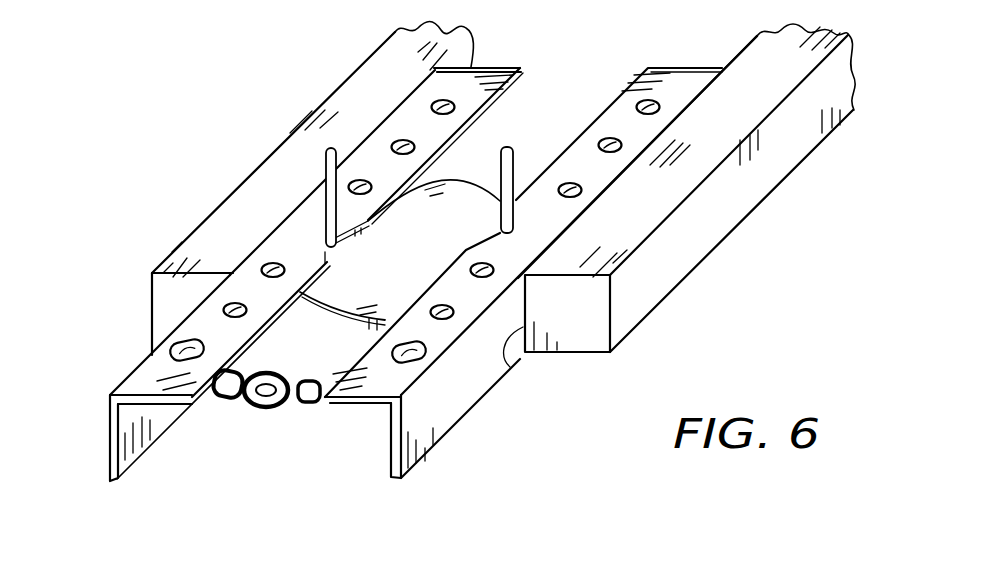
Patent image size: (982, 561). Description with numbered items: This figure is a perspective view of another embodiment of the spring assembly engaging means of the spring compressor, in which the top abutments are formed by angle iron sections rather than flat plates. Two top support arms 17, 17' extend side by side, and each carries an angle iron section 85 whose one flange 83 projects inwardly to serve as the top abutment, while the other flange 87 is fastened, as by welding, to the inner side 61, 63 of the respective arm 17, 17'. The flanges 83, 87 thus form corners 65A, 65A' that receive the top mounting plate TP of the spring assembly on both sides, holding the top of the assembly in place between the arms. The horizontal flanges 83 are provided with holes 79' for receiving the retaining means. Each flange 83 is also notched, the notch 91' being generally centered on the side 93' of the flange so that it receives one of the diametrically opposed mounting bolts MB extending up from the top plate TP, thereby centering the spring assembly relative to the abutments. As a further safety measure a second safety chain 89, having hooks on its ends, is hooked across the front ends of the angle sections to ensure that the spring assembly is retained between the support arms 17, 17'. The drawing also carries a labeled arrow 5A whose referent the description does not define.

The top support arm 17 is at (286, 189).
The top support arm 17' is at (705, 188).
The inner side of support arm 61 is at (465, 66).
The inner side of support arm 63 is at (510, 367).
The corner 65A is at (162, 453).
The corner 65A' is at (414, 443).
The holes 79' is at (560, 186).
The flange 83 is at (206, 322).
The angle iron section 85 is at (136, 368).
The flange 87 is at (108, 453).
The second safety chain 89 is at (258, 406).
The notch 91' is at (417, 219).
The side of flange 93' is at (608, 134).
The mounting bolts MB is at (326, 157).
The top mounting plate TP is at (356, 335).
The section view indicator 5A is at (457, 180).